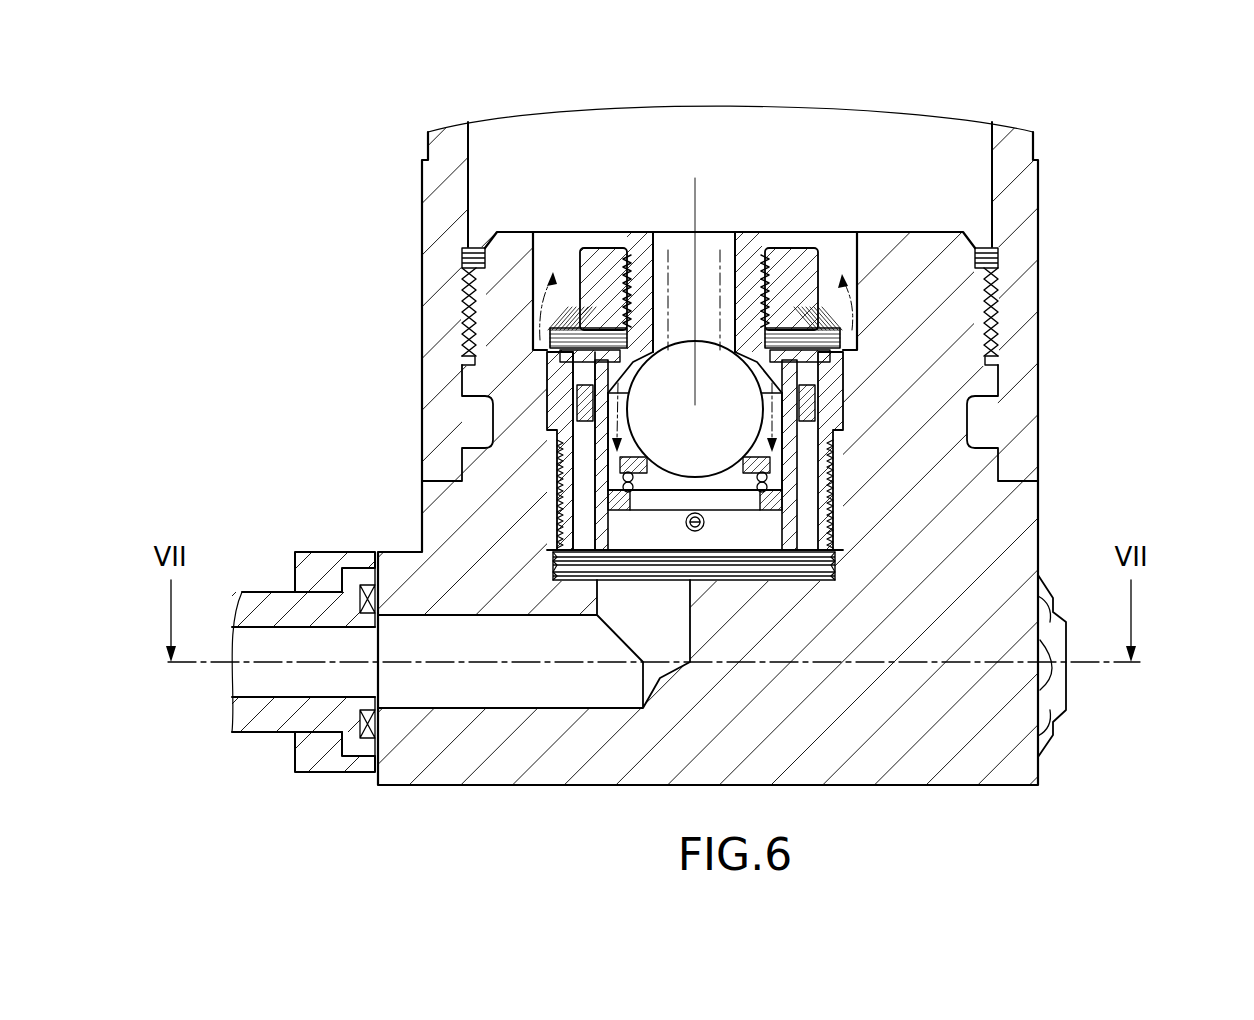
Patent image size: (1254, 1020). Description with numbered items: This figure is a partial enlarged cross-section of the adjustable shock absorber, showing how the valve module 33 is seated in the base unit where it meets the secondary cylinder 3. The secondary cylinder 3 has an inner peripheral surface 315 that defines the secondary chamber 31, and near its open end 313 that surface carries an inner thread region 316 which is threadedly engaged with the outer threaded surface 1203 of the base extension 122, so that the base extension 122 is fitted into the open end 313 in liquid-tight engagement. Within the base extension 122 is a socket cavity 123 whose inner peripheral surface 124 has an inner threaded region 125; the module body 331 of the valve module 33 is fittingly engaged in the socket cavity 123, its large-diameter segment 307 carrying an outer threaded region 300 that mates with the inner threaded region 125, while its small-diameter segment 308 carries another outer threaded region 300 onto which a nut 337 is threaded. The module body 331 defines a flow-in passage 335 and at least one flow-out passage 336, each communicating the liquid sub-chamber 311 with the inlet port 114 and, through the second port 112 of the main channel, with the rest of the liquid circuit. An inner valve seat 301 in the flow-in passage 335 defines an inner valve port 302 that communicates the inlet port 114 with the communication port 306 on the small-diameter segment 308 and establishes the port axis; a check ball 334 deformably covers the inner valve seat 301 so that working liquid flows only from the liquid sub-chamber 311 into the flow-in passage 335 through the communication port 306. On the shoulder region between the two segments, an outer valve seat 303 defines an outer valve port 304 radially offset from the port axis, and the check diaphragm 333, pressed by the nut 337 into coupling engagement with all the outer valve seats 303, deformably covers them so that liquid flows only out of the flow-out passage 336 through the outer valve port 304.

The secondary cylinder 3 is at (418, 148).
The secondary chamber 31 is at (748, 194).
The liquid sub-chamber 311 is at (927, 165).
The open end 313 is at (1020, 457).
The inner peripheral surface 315 is at (988, 150).
The inner thread region 316 is at (980, 250).
The valve module 33 is at (853, 214).
The module body 331 is at (833, 370).
The check diaphragm 333 is at (808, 330).
The check ball 334 is at (742, 440).
The flow-in passage 335 is at (735, 232).
The flow-out passage 336 is at (585, 418).
The nut 337 is at (604, 300).
The outer threaded region 300 is at (780, 330).
The inner valve seat 301 is at (620, 368).
The inner valve port 302 is at (742, 232).
The outer valve seat 303 is at (622, 335).
The outer valve port 304 is at (612, 335).
The communication port 306 is at (660, 238).
The large-diameter segment 307 is at (837, 522).
The small-diameter segment 308 is at (595, 272).
The base extension 122 is at (940, 237).
The socket cavity 123 is at (584, 246).
The inner peripheral surface 124 is at (555, 226).
The inner threaded region 125 is at (557, 505).
The outer threaded surface 1203 is at (996, 290).
The second port 112 is at (630, 582).
The inlet port 114 is at (373, 672).